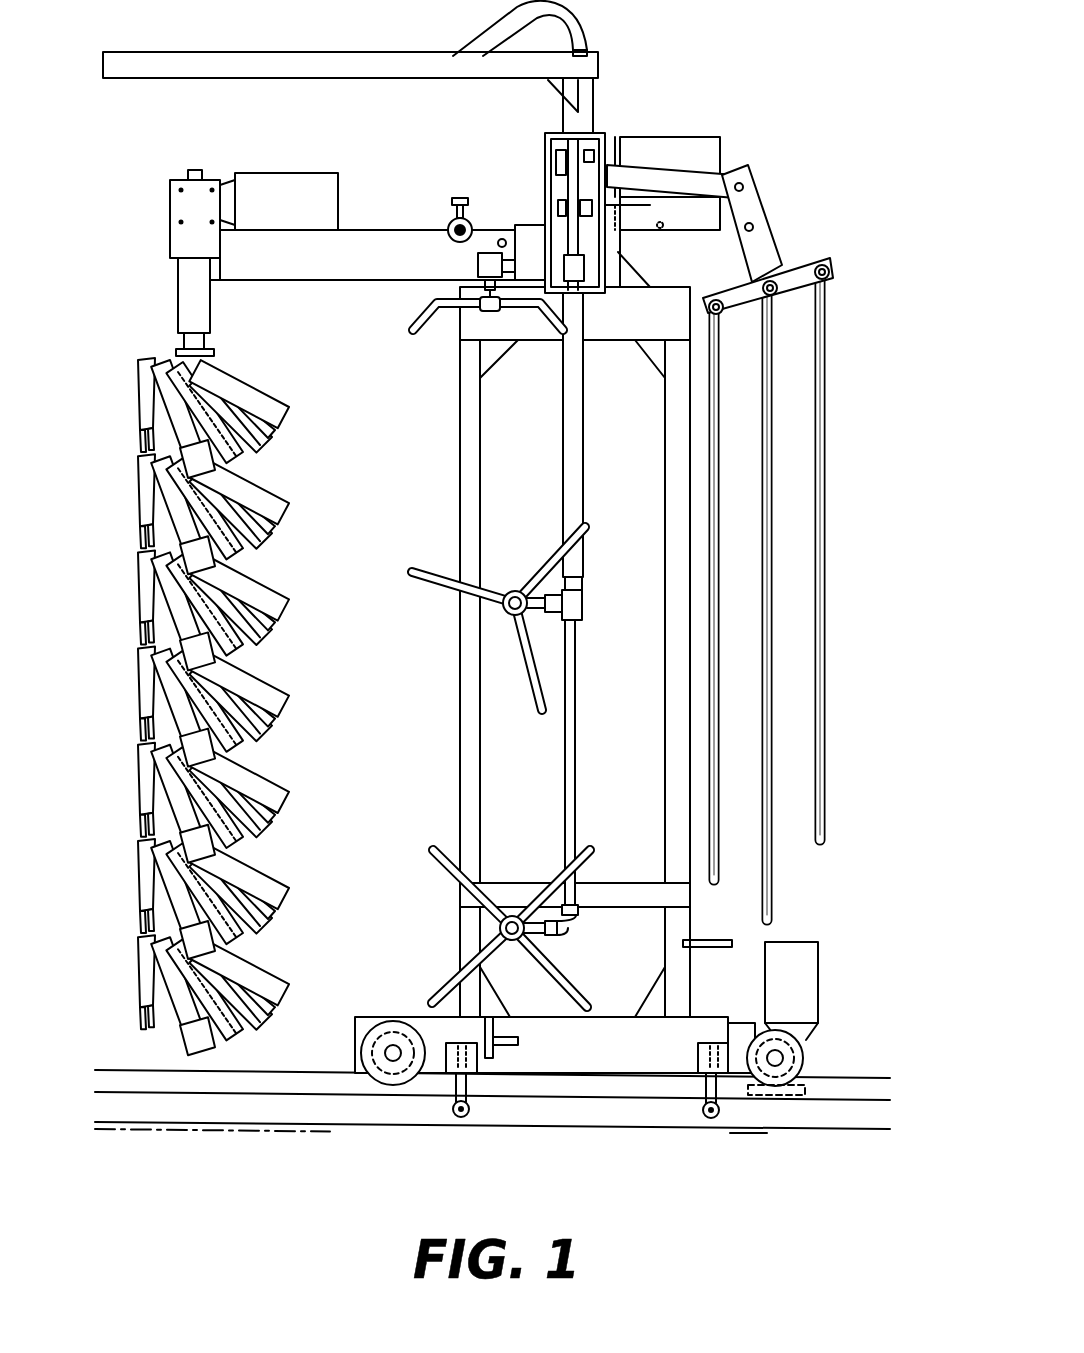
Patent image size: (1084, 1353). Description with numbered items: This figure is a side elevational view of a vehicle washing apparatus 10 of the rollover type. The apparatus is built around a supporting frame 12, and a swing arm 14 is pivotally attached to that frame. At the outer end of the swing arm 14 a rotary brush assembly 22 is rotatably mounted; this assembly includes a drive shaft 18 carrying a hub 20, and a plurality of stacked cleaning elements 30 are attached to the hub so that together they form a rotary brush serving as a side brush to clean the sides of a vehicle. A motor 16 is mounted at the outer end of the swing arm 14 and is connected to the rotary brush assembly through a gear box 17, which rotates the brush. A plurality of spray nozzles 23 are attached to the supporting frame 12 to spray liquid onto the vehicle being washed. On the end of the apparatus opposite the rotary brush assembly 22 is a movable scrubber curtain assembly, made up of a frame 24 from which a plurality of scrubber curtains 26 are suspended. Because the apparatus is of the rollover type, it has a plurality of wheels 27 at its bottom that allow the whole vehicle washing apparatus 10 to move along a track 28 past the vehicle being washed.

The vehicle washing apparatus 10 is at (718, 108).
The supporting frame 12 is at (630, 330).
The swing arm 14 is at (370, 260).
The motor 16 is at (290, 185).
The gear box 17 is at (170, 205).
The drive shaft 18 is at (185, 342).
The hub 20 is at (218, 355).
The rotary brush assembly 22 is at (228, 706).
The spray nozzles 23 is at (435, 585).
The frame 24 is at (780, 262).
The scrubber curtains 26 is at (840, 575).
The wheels 27 is at (800, 1057).
The track 28 is at (865, 1088).
The cleaning elements 30 is at (272, 440).